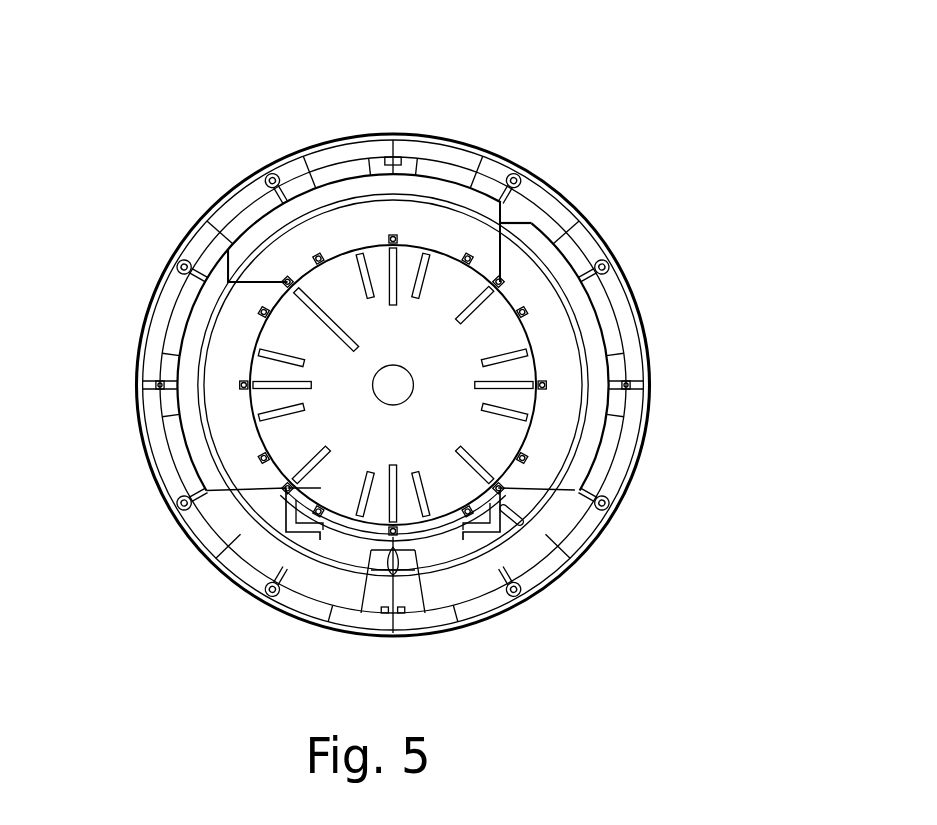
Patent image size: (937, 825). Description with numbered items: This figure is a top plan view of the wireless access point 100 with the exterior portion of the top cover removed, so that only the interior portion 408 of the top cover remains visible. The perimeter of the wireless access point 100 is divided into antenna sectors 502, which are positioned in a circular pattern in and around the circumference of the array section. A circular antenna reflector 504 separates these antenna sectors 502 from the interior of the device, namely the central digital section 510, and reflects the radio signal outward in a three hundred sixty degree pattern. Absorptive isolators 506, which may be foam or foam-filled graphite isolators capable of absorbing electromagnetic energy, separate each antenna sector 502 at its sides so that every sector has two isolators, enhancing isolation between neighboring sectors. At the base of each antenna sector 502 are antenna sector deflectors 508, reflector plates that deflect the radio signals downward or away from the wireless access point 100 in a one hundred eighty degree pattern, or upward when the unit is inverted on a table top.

The wireless access point 100 is at (792, 173).
The interior portion 408 is at (296, 335).
The antenna sectors 502 is at (523, 152).
The circular antenna reflector 504 is at (307, 153).
The absorptive isolators 506 is at (262, 178).
The antenna sector deflectors 508 is at (436, 168).
The central digital section 510 is at (372, 350).